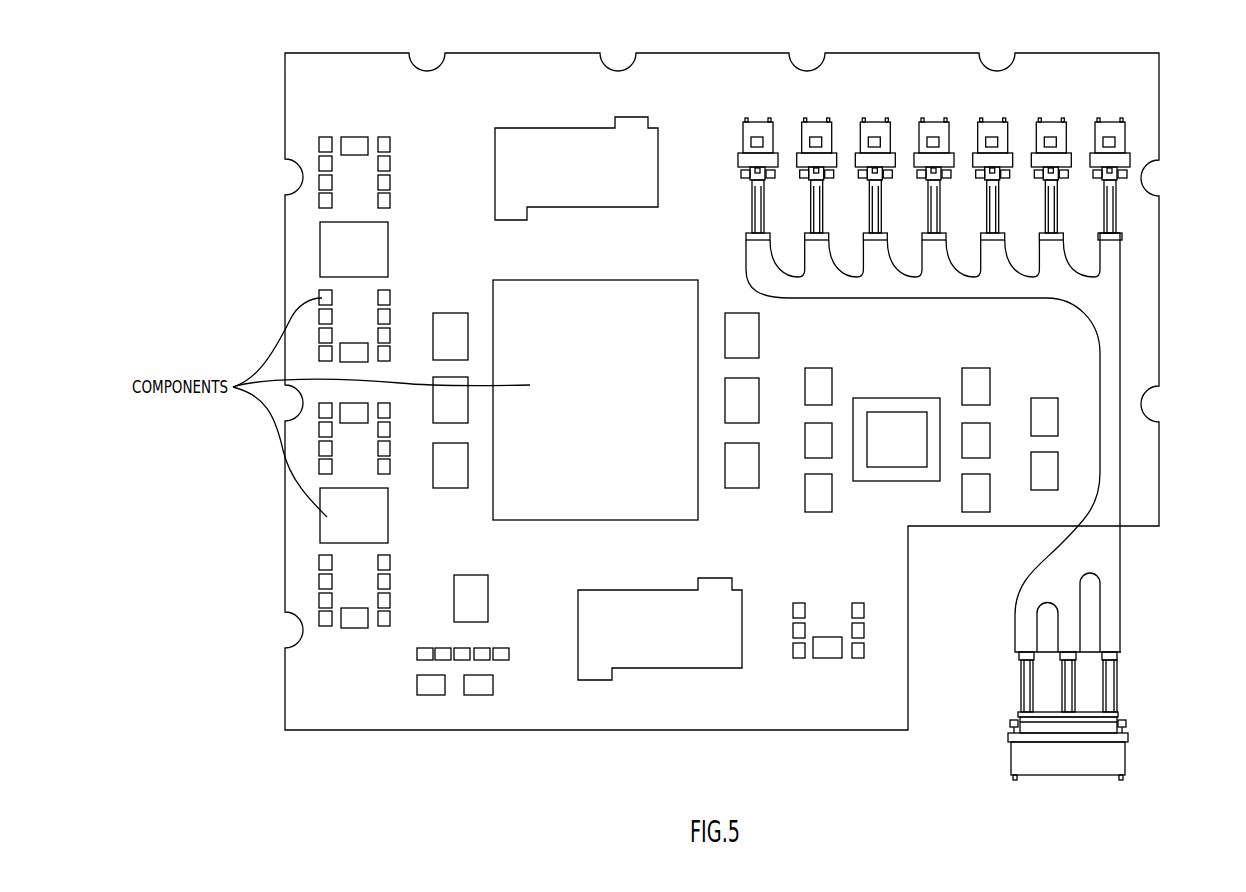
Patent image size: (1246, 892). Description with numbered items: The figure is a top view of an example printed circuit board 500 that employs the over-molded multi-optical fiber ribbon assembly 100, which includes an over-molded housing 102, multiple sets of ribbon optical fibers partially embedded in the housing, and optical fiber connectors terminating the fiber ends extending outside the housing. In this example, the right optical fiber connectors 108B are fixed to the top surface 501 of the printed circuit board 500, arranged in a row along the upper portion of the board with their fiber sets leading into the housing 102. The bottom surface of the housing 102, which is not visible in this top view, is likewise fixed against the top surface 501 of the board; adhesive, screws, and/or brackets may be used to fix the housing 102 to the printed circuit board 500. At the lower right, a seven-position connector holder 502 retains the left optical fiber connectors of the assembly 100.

The printed circuit board 500 is at (338, 49).
The top surface 501 is at (427, 260).
The right optical fiber connectors 108B is at (1128, 113).
The over-molded multi-optical fiber ribbon assembly 100 is at (1123, 208).
The over-molded housing 102 is at (1120, 325).
The connector holder 502 is at (1123, 758).